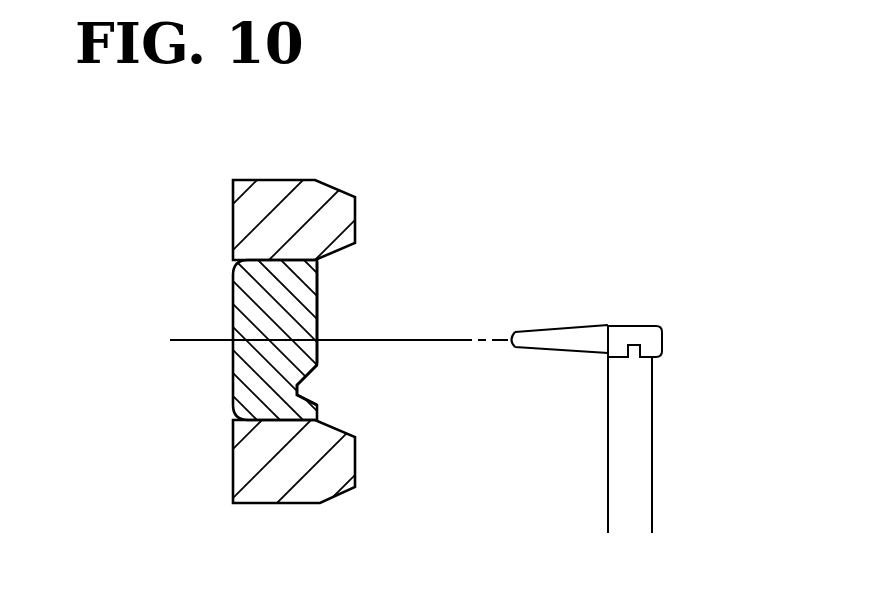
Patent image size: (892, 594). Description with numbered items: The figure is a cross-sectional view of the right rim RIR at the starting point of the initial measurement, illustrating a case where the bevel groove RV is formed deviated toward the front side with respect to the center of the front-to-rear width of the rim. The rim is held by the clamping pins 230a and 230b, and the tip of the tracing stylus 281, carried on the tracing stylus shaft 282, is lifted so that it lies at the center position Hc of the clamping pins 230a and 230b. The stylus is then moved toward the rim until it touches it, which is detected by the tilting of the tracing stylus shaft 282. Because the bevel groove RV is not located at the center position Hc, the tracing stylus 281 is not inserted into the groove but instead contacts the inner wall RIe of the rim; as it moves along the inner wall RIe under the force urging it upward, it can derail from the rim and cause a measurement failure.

The clamping pin 230a is at (300, 182).
The clamping pin 230b is at (303, 503).
The right rim RIR is at (233, 403).
The center position Hc is at (217, 338).
The inner wall of the rim RIe is at (332, 316).
The bevel groove RV is at (329, 389).
The tracing stylus 281 is at (568, 340).
The tracing stylus shaft 282 is at (647, 432).